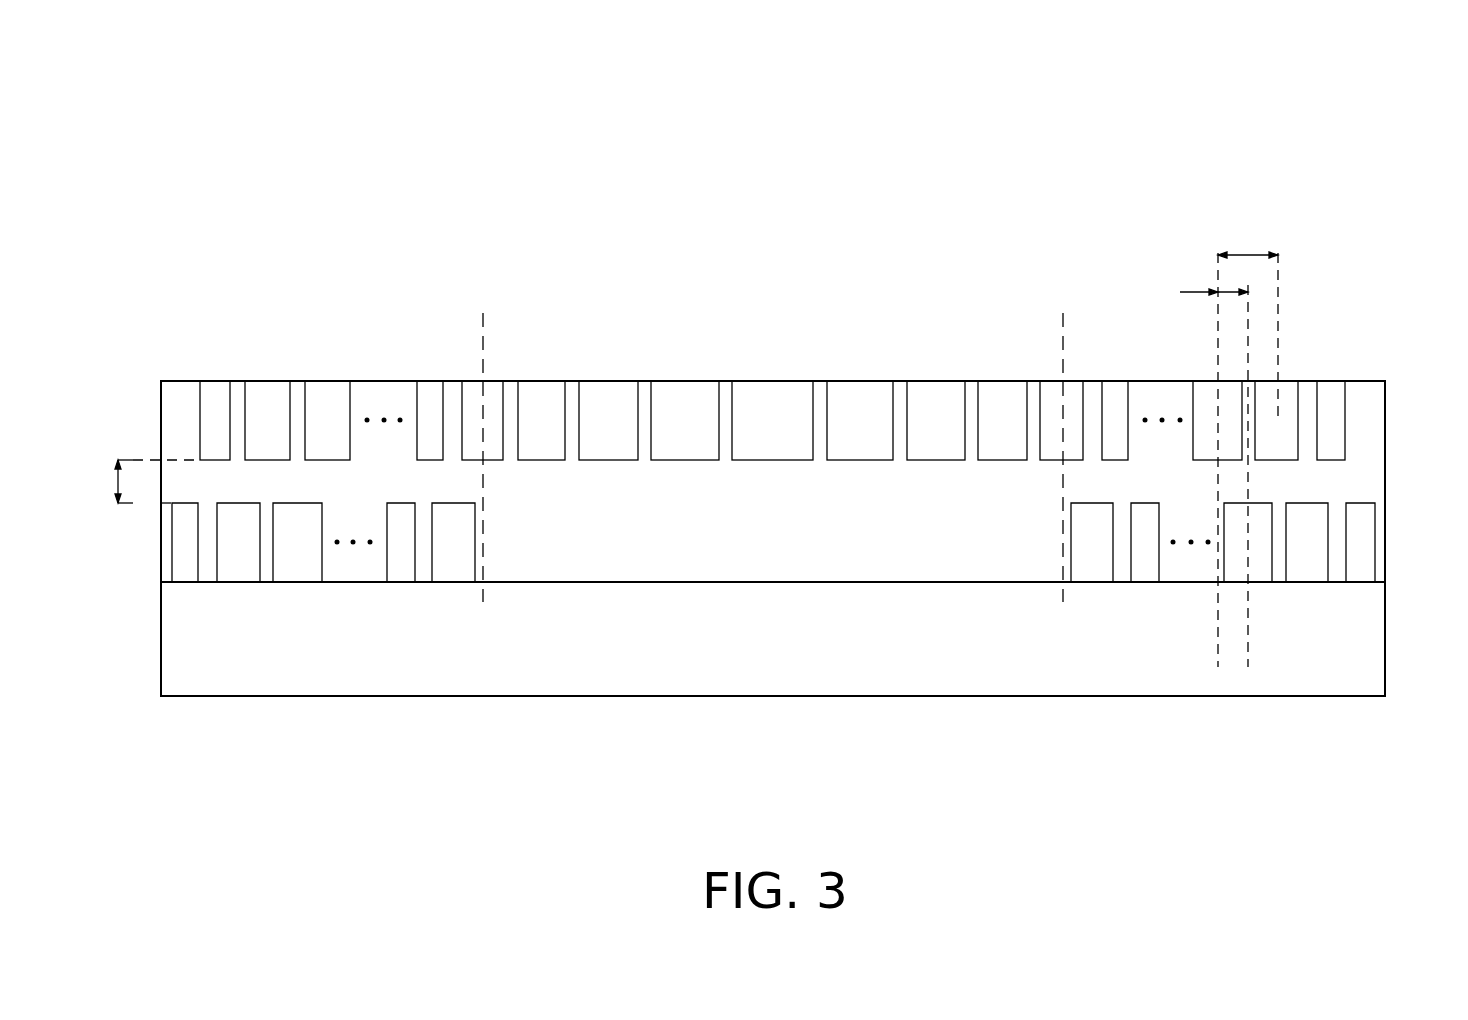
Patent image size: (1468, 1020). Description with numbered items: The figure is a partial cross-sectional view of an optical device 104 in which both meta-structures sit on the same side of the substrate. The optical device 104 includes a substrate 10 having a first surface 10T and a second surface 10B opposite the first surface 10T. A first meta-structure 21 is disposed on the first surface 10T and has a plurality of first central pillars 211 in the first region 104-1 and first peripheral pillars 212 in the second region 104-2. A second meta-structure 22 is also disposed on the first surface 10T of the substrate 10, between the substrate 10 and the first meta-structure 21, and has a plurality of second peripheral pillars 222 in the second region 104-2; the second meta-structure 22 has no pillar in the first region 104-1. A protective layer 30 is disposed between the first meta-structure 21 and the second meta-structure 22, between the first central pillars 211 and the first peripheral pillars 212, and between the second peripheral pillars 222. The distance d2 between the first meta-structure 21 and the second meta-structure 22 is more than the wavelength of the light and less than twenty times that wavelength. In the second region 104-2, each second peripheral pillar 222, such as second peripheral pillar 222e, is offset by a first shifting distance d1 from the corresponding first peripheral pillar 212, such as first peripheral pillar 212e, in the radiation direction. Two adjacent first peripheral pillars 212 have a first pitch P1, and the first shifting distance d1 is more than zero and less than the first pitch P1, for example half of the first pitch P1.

The optical device 104 is at (143, 45).
The first region 104-1 is at (773, 226).
The second region 104-2 is at (328, 226).
The substrate 10 is at (173, 639).
The first surface 10T is at (365, 574).
The second surface 10B is at (298, 702).
The first meta-structure 21 is at (1401, 382).
The second meta-structure 22 is at (1401, 503).
The protective layer 30 is at (1373, 482).
The first central pillars 211 is at (860, 391).
The first peripheral pillars 212 is at (268, 393).
The first peripheral pillar 212e is at (1207, 392).
The second peripheral pillars 222 is at (453, 570).
The second peripheral pillar 222e is at (1258, 570).
The first shifting distance d1 is at (1214, 460).
The distance d2 is at (104, 481).
The first pitch P1 is at (1248, 320).